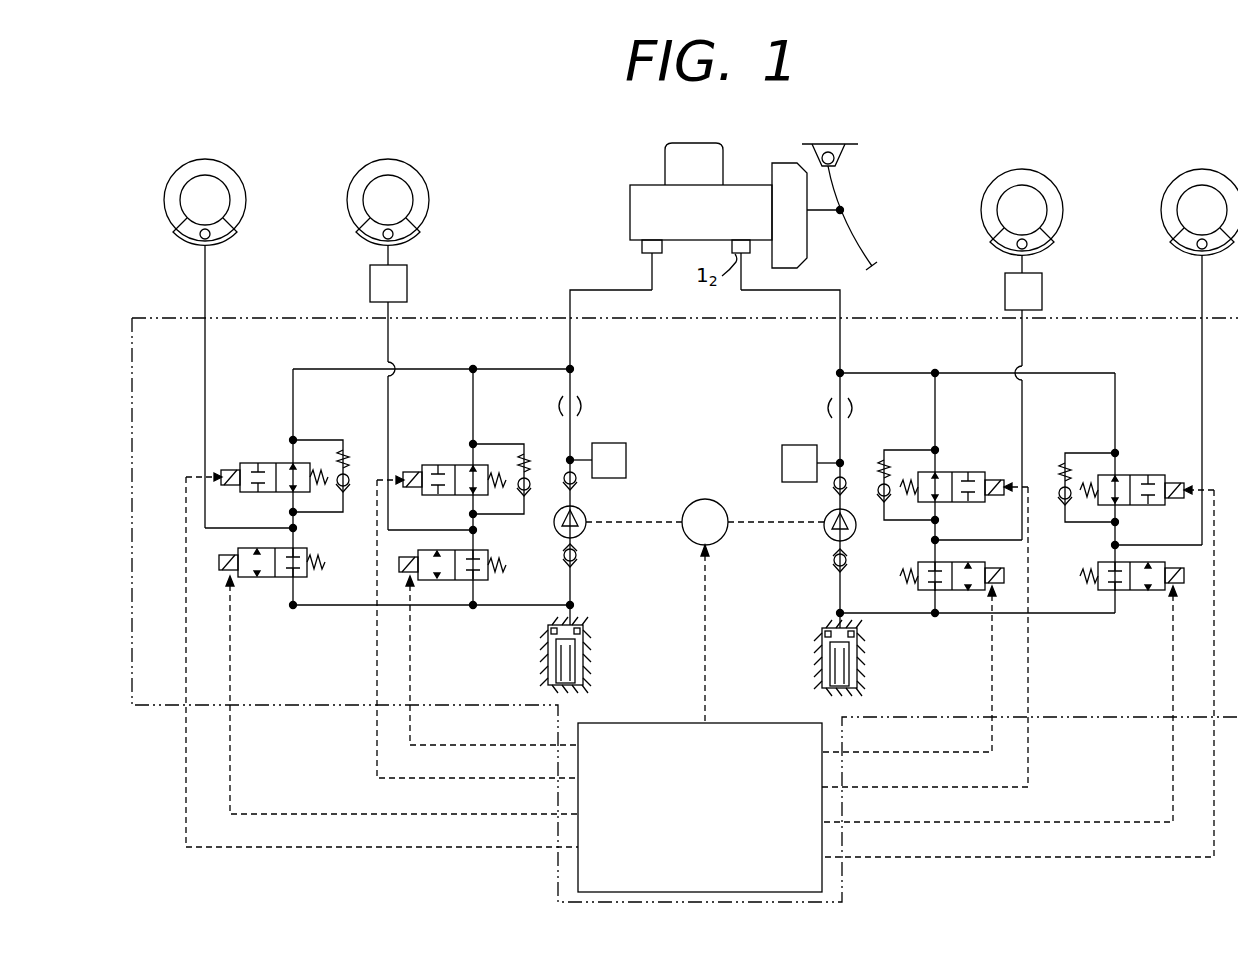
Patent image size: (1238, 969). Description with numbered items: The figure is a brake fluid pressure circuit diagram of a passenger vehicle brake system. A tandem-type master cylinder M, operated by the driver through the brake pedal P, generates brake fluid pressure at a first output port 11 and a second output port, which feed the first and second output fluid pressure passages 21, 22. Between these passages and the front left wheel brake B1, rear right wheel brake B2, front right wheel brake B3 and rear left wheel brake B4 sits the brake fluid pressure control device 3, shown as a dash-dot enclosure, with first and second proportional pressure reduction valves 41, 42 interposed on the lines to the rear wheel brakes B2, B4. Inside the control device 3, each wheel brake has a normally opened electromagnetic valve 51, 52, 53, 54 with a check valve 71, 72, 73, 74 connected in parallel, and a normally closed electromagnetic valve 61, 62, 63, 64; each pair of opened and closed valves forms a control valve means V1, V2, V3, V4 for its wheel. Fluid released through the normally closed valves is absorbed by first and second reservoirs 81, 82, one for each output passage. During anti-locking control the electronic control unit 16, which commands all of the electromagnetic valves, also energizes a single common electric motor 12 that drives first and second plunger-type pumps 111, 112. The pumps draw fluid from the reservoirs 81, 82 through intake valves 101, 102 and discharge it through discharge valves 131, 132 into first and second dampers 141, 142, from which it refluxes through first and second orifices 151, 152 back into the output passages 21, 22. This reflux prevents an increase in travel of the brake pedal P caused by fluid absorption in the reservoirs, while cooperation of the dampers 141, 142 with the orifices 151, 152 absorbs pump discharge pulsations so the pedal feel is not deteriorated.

The brake fluid pressure control device 3 is at (318, 312).
The front left wheel brake B1 is at (246, 199).
The rear right wheel brake B2 is at (427, 201).
The front right wheel brake B3 is at (1164, 206).
The rear left wheel brake B4 is at (983, 206).
The tandem-type master cylinder M is at (630, 206).
The brake pedal P is at (863, 246).
The first output port 11 is at (642, 252).
The electric motor 12 is at (700, 548).
The first output fluid pressure passage 21 is at (570, 305).
The second output fluid pressure passage 22 is at (840, 302).
The first proportional pressure reduction valve 41 is at (407, 288).
The second proportional pressure reduction valve 42 is at (1042, 288).
The first control valve means V1 is at (274, 419).
The second control valve means V2 is at (466, 435).
The third control valve means V3 is at (1132, 432).
The fourth control valve means V4 is at (941, 439).
The first normally opened electromagnetic valve 51 is at (266, 462).
The second normally opened electromagnetic valve 52 is at (448, 464).
The third normally opened electromagnetic valve 53 is at (1143, 474).
The fourth normally opened electromagnetic valve 54 is at (962, 471).
The first normally closed electromagnetic valve 61 is at (249, 580).
The second normally closed electromagnetic valve 62 is at (431, 582).
The third normally closed electromagnetic valve 63 is at (1143, 592).
The fourth normally closed electromagnetic valve 64 is at (975, 592).
The first check valve 71 is at (347, 494).
The second check valve 72 is at (529, 498).
The third check valve 73 is at (1063, 506).
The fourth check valve 74 is at (882, 504).
The first reservoir 81 is at (586, 648).
The second reservoir 82 is at (820, 650).
The first intake valve 101 is at (577, 556).
The second intake valve 102 is at (833, 560).
The first plunger-type pump 111 is at (588, 516).
The second plunger-type pump 112 is at (824, 520).
The first discharge valve 131 is at (565, 470).
The second discharge valve 132 is at (847, 476).
The first damper 141 is at (614, 446).
The second damper 142 is at (782, 458).
The first orifice 151 is at (580, 408).
The second orifice 152 is at (831, 412).
The electronic control unit 16 is at (700, 682).